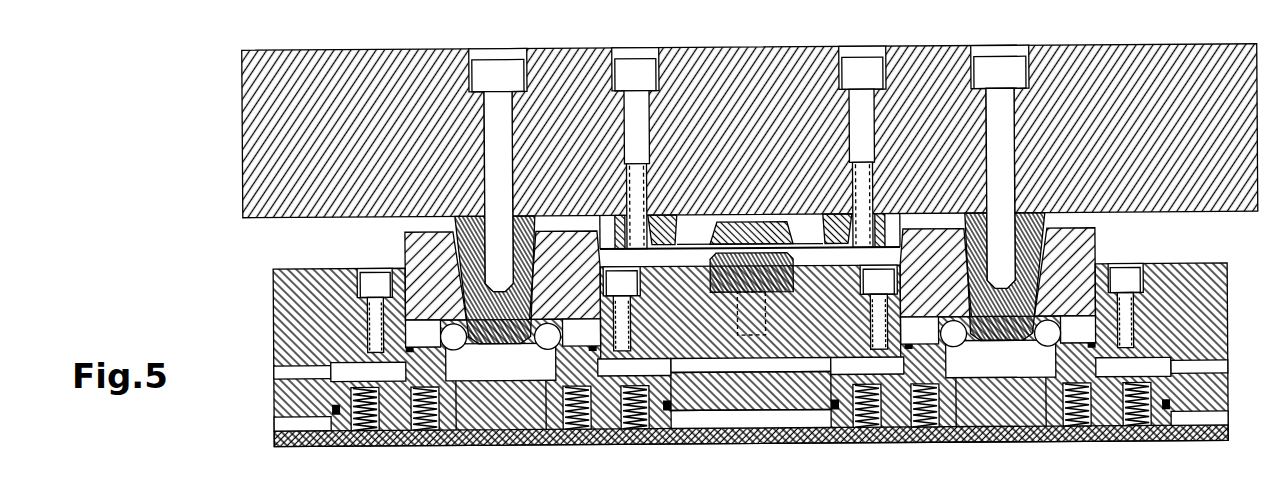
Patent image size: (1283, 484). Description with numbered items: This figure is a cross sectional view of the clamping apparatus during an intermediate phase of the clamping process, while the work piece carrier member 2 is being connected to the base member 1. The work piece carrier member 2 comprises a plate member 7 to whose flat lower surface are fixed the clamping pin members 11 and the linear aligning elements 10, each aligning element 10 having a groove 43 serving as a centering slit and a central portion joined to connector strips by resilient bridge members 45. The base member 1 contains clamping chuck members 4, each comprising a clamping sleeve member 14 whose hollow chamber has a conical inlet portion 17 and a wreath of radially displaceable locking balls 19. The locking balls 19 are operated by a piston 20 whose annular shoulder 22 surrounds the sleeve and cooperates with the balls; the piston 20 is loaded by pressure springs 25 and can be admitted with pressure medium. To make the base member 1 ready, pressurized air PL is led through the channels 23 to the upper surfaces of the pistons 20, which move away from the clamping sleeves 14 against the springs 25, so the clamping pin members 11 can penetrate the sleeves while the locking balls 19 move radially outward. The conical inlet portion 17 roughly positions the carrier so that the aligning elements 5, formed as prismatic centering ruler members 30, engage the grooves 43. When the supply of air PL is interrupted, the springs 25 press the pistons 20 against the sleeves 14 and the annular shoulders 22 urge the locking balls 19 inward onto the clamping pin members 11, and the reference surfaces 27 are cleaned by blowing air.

The base member 1 is at (262, 324).
The work piece carrier member 2 is at (232, 51).
The clamping chuck member 4 is at (380, 239).
The linear aligning element 5 is at (724, 312).
The plate member 7 is at (290, 97).
The linear aligning element 10 is at (743, 205).
The clamping pin member 11 is at (502, 330).
The clamping sleeve member 14 is at (405, 260).
The inlet portion 17 is at (548, 262).
The locking balls 19 is at (458, 350).
The piston 20 is at (487, 410).
The annular shoulder 22 is at (590, 400).
The channel 23 is at (270, 372).
The pressure springs 25 is at (423, 433).
The reference surface 27 is at (433, 230).
The centering ruler member 30 is at (762, 257).
The groove 43 is at (727, 232).
The resilient bridge members 45 is at (697, 483).
The pressurized air PL is at (262, 371).